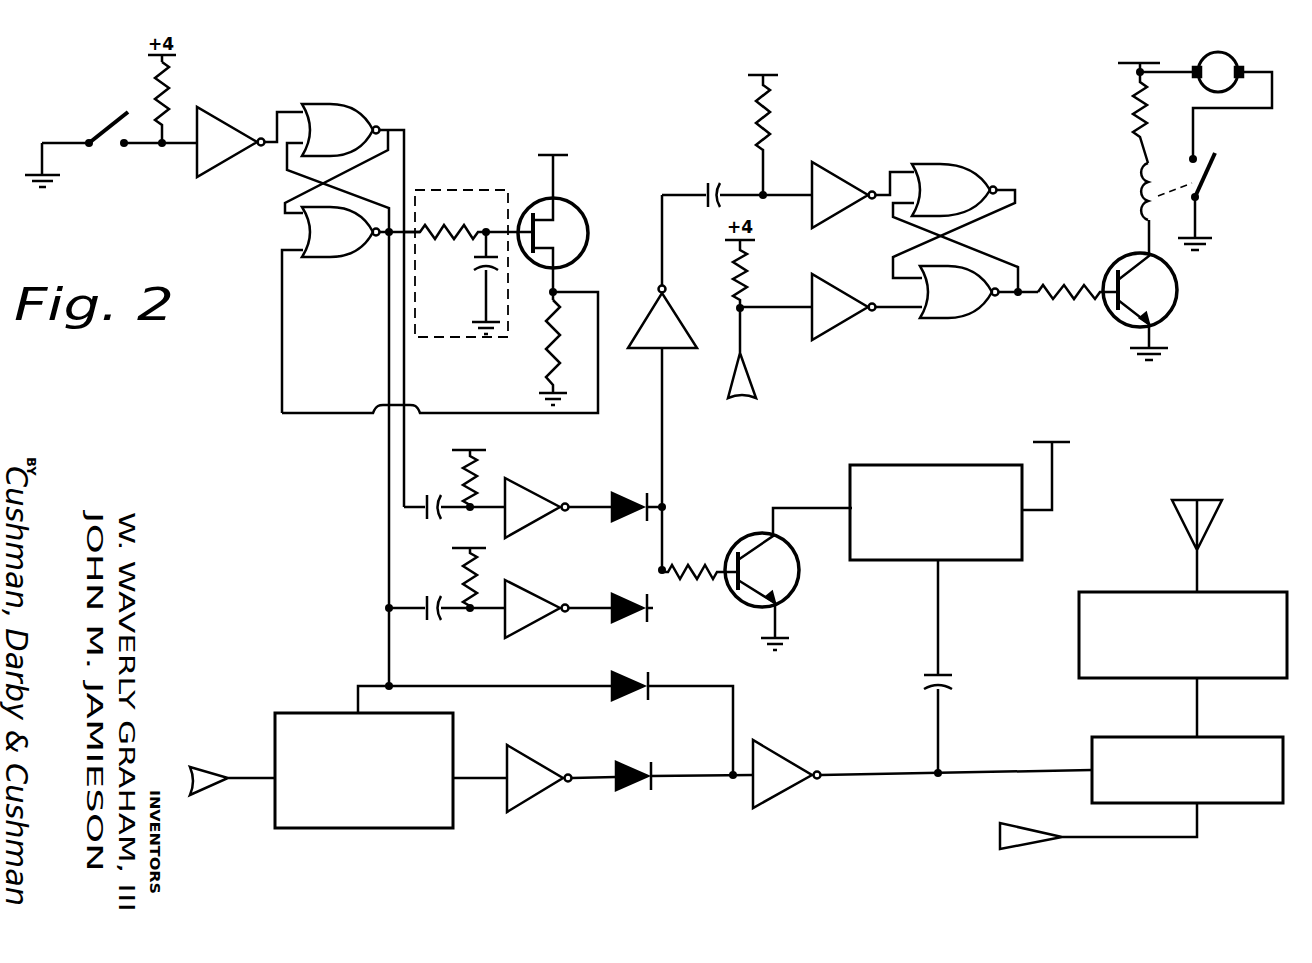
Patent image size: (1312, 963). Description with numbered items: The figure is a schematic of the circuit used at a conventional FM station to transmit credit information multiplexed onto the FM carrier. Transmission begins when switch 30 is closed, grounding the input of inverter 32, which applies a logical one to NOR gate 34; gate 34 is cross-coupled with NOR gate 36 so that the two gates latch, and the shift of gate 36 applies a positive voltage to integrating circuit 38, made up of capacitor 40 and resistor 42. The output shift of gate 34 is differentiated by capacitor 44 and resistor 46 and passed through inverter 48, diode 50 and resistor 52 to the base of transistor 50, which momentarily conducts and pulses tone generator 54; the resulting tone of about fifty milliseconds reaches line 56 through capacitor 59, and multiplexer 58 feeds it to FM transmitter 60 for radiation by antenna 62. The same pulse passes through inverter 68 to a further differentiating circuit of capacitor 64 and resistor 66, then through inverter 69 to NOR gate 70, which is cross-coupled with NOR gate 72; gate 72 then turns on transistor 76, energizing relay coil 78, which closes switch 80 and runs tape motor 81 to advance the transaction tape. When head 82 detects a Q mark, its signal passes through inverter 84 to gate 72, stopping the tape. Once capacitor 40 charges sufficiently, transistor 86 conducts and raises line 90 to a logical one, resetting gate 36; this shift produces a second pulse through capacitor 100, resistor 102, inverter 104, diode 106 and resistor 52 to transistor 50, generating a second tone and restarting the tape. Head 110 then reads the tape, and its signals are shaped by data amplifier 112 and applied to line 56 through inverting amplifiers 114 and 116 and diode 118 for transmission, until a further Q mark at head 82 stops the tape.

The switch 30 is at (120, 124).
The inverter 32 is at (206, 120).
The NOR gate 34 is at (333, 108).
The NOR gate 36 is at (320, 252).
The integrating circuit 38 is at (452, 190).
The capacitor 40 is at (480, 268).
The resistor 42 is at (428, 232).
The capacitor 44 is at (432, 492).
The resistor 46 is at (478, 482).
The inverter 48 is at (527, 498).
The transistor / diode 50 is at (622, 490).
The resistor 52 is at (694, 560).
The tone generator 54 is at (908, 473).
The line 56 is at (992, 772).
The multiplexer 58 is at (1158, 737).
The capacitor 59 is at (952, 680).
The FM transmitter 60 is at (1120, 592).
The antenna 62 is at (1212, 512).
The capacitor 64 is at (712, 170).
The resistor 66 is at (755, 120).
The inverter 68 is at (665, 330).
The inverter 69 is at (831, 183).
The NOR gate 70 is at (948, 168).
The NOR gate 72 is at (960, 318).
The transistor 76 is at (1155, 300).
The relay coil 78 is at (1140, 186).
The switch 80 is at (1208, 152).
The tape motor 81 is at (1229, 58).
The head 82 is at (737, 390).
The inverter 84 is at (838, 325).
The transistor 86 is at (572, 216).
The line 90 is at (282, 350).
The capacitor 100 is at (441, 632).
The resistor 102 is at (478, 578).
The inverter 104 is at (550, 603).
The diode 106 is at (626, 622).
The head 110 is at (207, 770).
The data amplifier 112 is at (362, 818).
The inverting amplifier 114 is at (530, 793).
The inverting amplifier 116 is at (780, 784).
The diode 118 is at (622, 790).